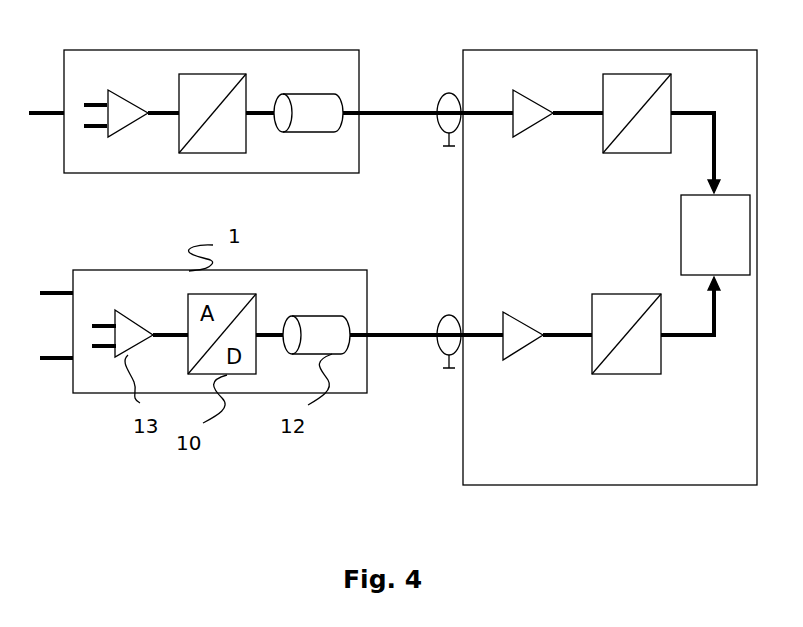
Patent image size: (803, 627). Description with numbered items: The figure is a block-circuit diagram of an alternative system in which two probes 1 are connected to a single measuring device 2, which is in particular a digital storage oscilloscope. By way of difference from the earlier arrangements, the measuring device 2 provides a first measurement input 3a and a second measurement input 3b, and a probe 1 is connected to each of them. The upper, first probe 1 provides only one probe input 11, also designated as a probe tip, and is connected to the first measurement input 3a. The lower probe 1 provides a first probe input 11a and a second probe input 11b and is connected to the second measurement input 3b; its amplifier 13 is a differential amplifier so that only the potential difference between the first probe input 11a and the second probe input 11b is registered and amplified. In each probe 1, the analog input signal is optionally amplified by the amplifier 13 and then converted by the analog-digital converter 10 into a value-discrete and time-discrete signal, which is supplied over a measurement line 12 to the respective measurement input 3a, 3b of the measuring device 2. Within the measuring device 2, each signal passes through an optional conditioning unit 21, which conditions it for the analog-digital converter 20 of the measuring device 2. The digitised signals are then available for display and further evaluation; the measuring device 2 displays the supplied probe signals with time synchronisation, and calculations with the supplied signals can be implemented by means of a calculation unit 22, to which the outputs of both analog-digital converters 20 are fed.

The probe 1 is at (180, 50).
The measuring device 2 is at (523, 50).
The first measurement input 3a is at (447, 93).
The second measurement input 3b is at (447, 313).
The analog-digital converter 10 is at (217, 154).
The probe input 11 is at (44, 113).
The first probe input 11a is at (58, 292).
The second probe input 11b is at (50, 360).
The measurement line 12 is at (318, 133).
The amplifier 13 is at (117, 90).
The analog-digital converter 20 is at (603, 150).
The conditioning unit 21 is at (513, 137).
The calculation unit 22 is at (681, 243).